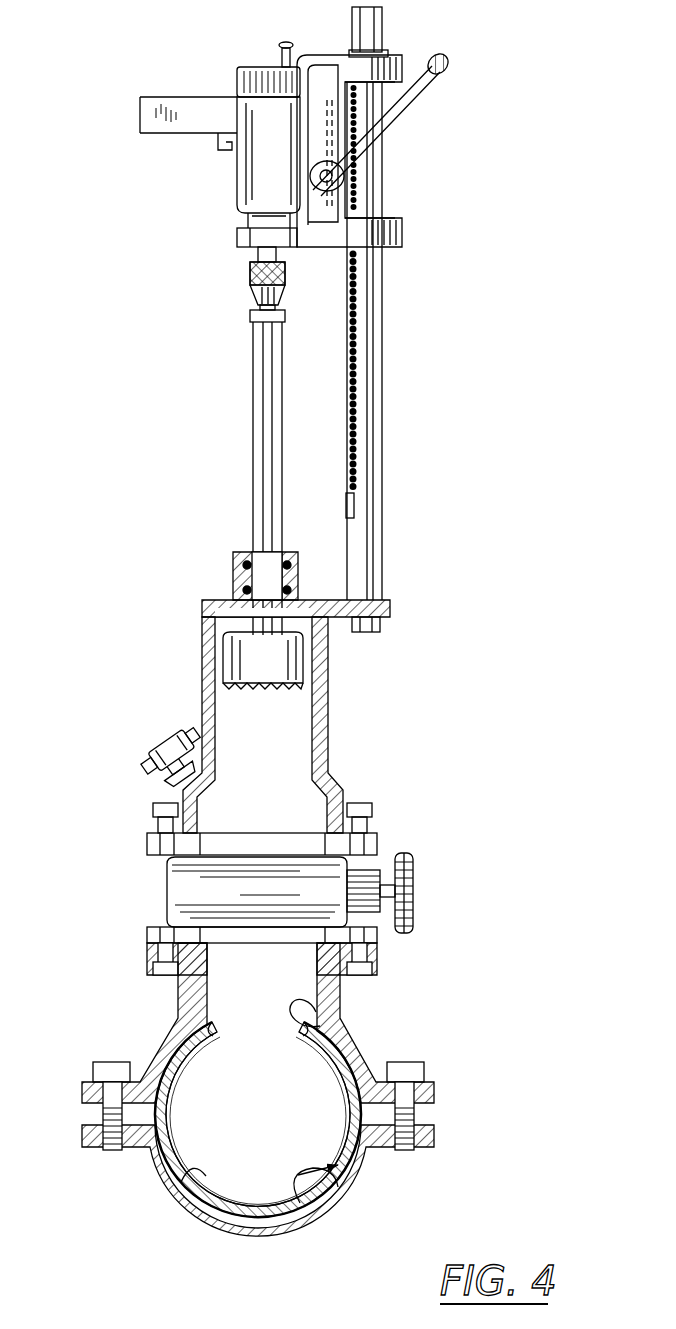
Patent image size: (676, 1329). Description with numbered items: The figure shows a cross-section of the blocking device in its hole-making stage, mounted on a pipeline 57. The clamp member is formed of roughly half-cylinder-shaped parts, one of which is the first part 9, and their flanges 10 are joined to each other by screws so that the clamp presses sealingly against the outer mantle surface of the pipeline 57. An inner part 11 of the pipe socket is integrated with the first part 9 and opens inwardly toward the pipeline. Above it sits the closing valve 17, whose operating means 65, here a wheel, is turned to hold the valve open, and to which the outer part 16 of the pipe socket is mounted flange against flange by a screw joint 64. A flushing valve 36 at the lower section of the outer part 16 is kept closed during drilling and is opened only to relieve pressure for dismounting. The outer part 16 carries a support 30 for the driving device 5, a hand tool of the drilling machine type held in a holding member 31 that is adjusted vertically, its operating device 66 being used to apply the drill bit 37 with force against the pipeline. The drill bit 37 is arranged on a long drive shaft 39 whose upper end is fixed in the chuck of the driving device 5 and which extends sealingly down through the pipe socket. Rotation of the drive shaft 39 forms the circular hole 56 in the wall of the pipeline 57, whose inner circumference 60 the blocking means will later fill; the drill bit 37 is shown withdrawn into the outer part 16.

The driving device 5 is at (229, 197).
The holding member 31 is at (343, 62).
The operating device 66 is at (400, 108).
The support 30 is at (383, 373).
The drive shaft 39 is at (265, 357).
The drill bit 37 is at (237, 650).
The outer part 16 is at (208, 668).
The flushing valve 36 is at (177, 727).
The screw joint 64 is at (355, 812).
The closing valve 17 is at (414, 873).
The operating means 65 is at (410, 930).
The inner part 11 is at (187, 998).
The first part 9 is at (170, 1038).
The flanges 10 is at (93, 1078).
The hole 56 is at (292, 1008).
The inner circumference 60 is at (170, 1193).
The pipeline 57 is at (308, 1203).